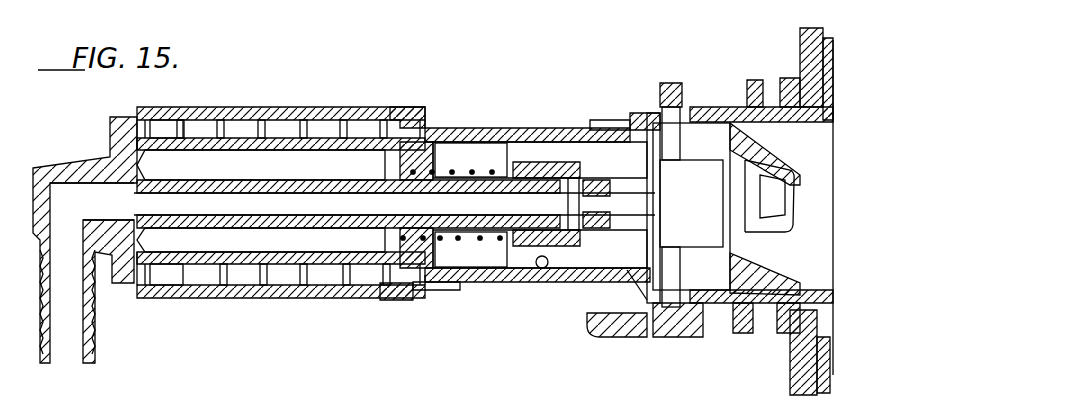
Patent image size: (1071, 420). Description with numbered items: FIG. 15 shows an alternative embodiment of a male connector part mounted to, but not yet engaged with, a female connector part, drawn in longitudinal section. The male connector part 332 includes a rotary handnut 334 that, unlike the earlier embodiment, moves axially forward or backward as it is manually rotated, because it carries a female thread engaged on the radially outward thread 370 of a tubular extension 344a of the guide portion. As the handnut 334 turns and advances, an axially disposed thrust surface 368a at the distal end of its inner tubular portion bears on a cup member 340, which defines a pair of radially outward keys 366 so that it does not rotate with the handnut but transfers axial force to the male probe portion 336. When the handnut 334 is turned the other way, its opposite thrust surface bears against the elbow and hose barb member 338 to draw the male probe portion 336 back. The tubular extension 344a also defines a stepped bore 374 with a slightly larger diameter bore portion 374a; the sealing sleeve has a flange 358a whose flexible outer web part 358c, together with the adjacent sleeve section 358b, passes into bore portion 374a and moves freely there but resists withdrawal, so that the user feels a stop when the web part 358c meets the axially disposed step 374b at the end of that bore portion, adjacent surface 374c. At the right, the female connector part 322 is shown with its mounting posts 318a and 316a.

The lower flange post 316a is at (793, 380).
The upper flange post 318a is at (828, 28).
The valve body hub 322 is at (750, 70).
The outer barrel 332 is at (336, 79).
The rotary handnut 334 is at (363, 118).
The male probe portion 336 is at (232, 228).
The elbow and hose barb member 338 is at (80, 165).
The cup member 340 is at (356, 178).
The tubular extension 344a is at (486, 126).
The flange 358a is at (503, 270).
The seal insert 358b is at (552, 162).
The web part 358c is at (520, 137).
The keys 366 is at (400, 248).
The thrust surface 368a is at (405, 193).
The thread 370 is at (405, 114).
The stepped bore 374 is at (456, 280).
The larger diameter bore portion 374a is at (590, 124).
The step 374b is at (540, 268).
The cross pin 374c is at (522, 282).